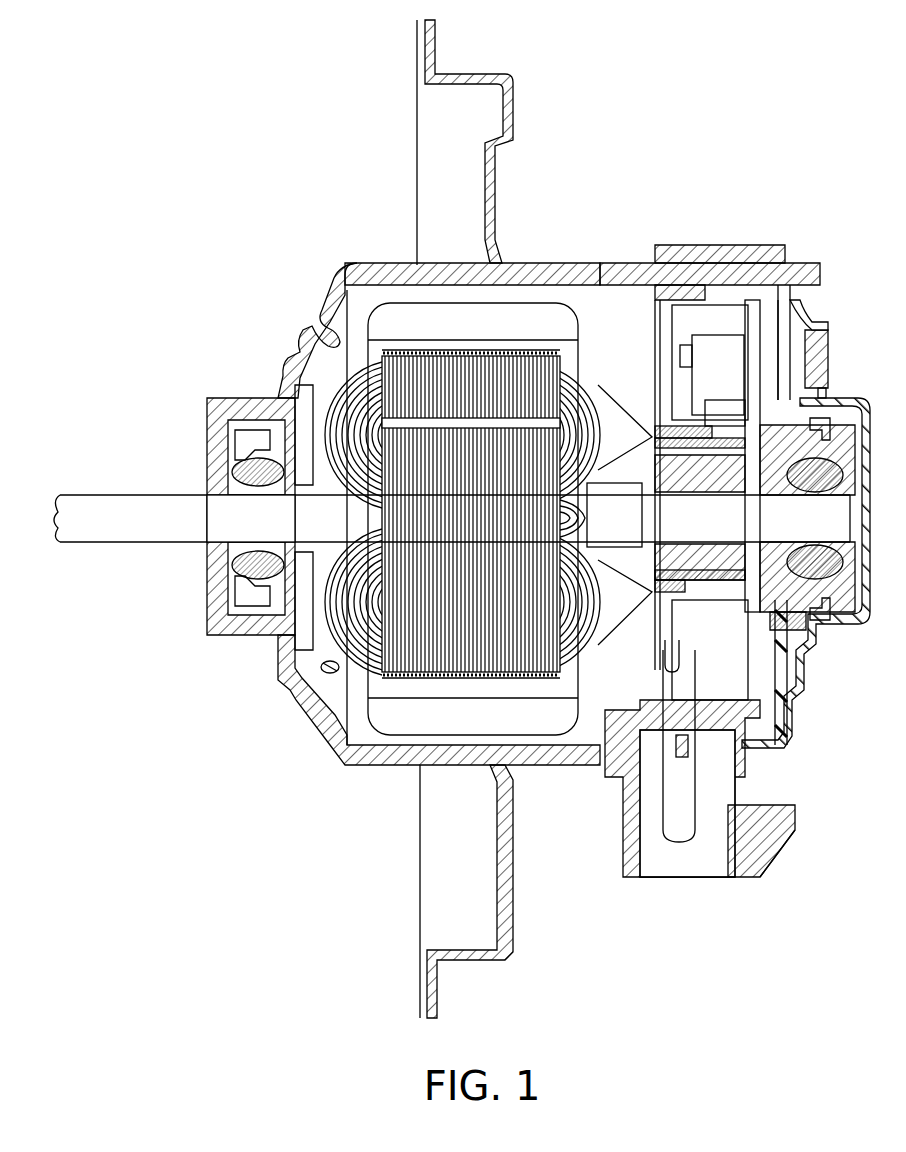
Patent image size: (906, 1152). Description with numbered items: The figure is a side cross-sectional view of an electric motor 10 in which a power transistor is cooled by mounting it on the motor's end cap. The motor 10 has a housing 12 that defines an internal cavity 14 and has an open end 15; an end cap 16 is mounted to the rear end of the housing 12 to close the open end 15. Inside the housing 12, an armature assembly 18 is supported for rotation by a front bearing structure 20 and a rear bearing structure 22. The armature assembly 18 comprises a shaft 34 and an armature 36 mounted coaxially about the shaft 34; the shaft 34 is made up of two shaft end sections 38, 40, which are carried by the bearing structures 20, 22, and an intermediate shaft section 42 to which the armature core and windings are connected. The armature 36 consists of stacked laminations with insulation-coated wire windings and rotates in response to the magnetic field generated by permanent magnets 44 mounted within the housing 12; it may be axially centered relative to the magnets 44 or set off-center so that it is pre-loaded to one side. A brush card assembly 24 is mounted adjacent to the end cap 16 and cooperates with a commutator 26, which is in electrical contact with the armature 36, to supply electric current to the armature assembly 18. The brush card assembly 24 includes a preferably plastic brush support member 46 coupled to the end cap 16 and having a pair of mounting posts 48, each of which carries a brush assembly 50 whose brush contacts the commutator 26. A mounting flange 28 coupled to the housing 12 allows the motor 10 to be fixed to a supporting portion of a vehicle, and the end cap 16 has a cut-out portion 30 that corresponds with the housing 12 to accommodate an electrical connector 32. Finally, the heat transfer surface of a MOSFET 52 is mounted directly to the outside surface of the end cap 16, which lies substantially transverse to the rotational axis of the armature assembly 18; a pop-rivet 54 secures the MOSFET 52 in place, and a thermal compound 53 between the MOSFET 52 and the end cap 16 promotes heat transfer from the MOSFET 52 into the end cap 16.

The motor 10 is at (633, 136).
The housing 12 is at (386, 263).
The internal cavity 14 is at (609, 286).
The open end 15 is at (680, 698).
The end cap 16 is at (838, 632).
The armature assembly 18 is at (528, 716).
The front bearing structure 20 is at (222, 590).
The rear bearing structure 22 is at (845, 626).
The brush card assembly 24 is at (782, 336).
The commutator 26 is at (648, 440).
The mounting flange 28 is at (469, 74).
The cut-out portion 30 is at (750, 778).
The electrical connector 32 is at (790, 820).
The shaft 34 is at (838, 498).
The armature 36 is at (440, 356).
The shaft end section 38 is at (826, 532).
The shaft end section 40 is at (104, 535).
The intermediate shaft section 42 is at (623, 530).
The permanent magnets 44 is at (470, 303).
The brush support member 46 is at (745, 418).
The mounting posts 48 is at (686, 422).
The brush assembly 50 is at (688, 333).
The MOSFET 52 is at (829, 348).
The thermal compound 53 is at (812, 326).
The pop-rivet 54 is at (828, 392).